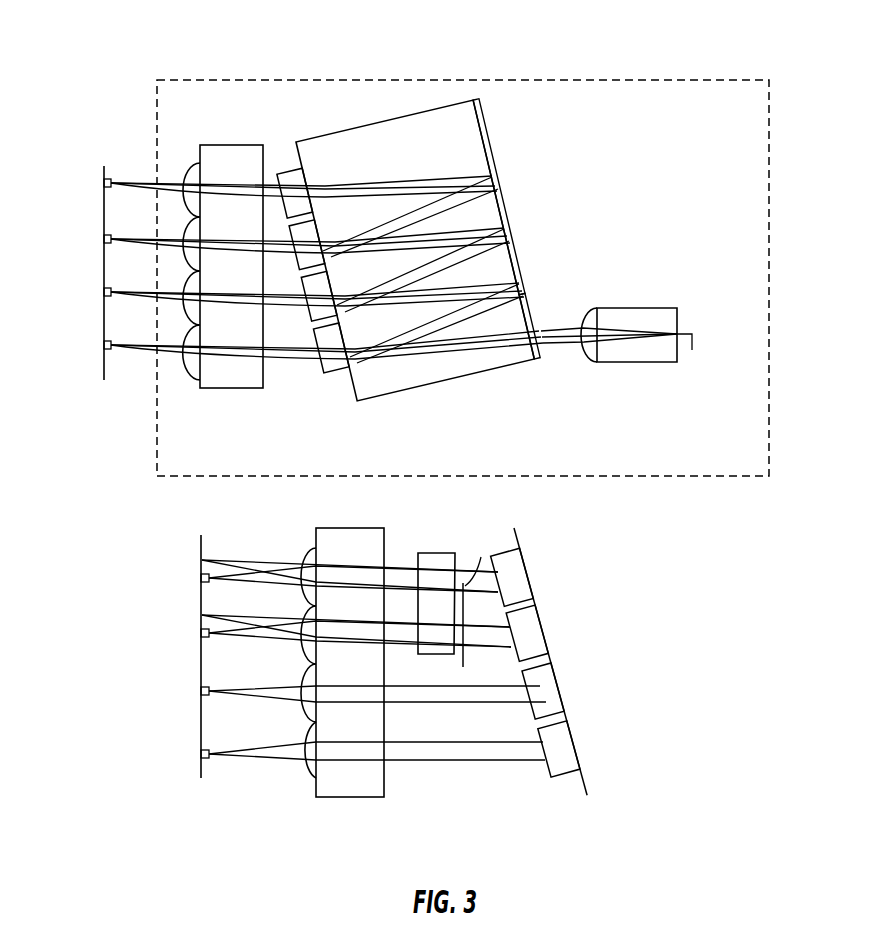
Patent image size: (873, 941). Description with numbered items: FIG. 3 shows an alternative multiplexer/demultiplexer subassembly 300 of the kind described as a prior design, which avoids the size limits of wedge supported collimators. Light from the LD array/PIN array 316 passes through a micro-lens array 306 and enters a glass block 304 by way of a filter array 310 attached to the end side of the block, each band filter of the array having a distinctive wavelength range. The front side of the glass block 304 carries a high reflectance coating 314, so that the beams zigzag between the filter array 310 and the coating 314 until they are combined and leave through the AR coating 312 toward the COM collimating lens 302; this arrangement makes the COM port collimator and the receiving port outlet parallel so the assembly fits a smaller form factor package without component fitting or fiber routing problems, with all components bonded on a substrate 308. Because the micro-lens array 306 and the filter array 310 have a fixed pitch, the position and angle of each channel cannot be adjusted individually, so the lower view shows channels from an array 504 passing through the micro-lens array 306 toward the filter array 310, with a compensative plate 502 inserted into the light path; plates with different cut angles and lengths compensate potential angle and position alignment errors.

The MUX/DeMUX subassembly 300 is at (772, 56).
The collimating lens 302 is at (636, 298).
The glass block 304 is at (449, 385).
The micro-lens array 306 is at (230, 393).
The housing 308 is at (733, 456).
The filter array 310 is at (287, 160).
The AR coating 312 is at (550, 370).
The high reflectance coating 314 is at (508, 190).
The LD array/PIN array 316 is at (97, 198).
The compensative plate 502 is at (437, 542).
The LD array/PIN array 504 is at (175, 528).